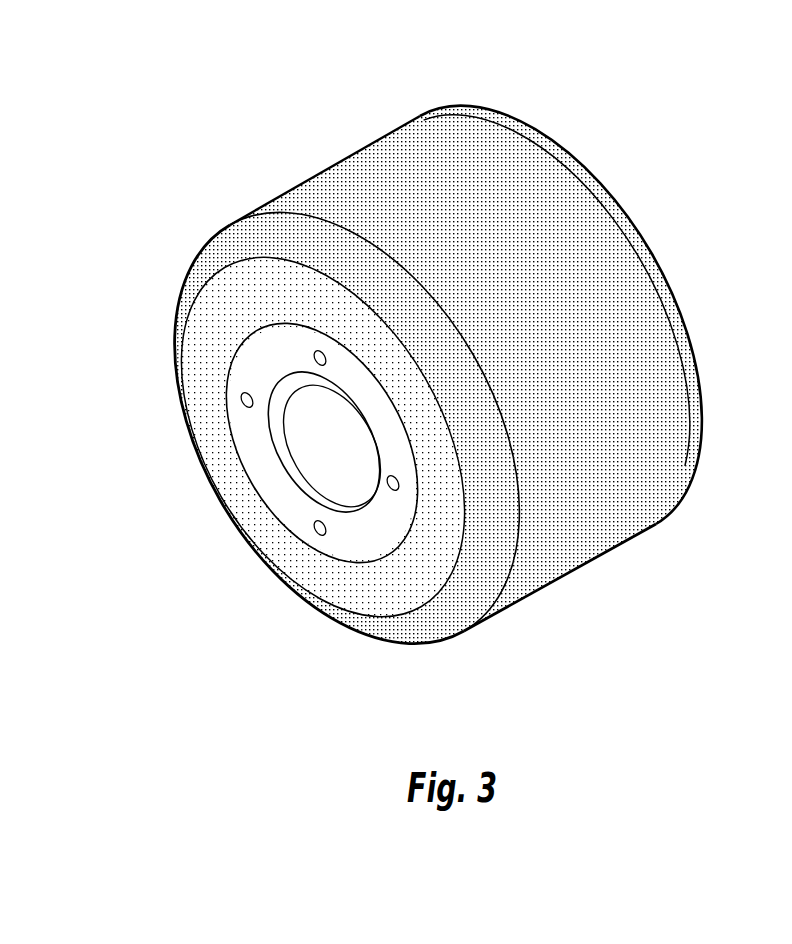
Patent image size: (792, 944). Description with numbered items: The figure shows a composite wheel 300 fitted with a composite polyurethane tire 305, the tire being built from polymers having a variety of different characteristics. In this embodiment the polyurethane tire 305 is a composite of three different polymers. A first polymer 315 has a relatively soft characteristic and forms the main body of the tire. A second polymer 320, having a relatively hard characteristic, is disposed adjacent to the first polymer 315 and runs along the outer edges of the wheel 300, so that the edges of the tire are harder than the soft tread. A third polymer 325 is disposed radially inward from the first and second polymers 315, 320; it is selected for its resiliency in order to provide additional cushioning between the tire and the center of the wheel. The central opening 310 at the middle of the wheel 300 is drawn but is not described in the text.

The composite wheel 300 is at (396, 472).
The composite polyurethane tire 305 is at (434, 650).
The central bore 310 is at (287, 473).
The first polymer 315 is at (396, 472).
The second polymer 320 is at (490, 580).
The third polymer 325 is at (317, 580).